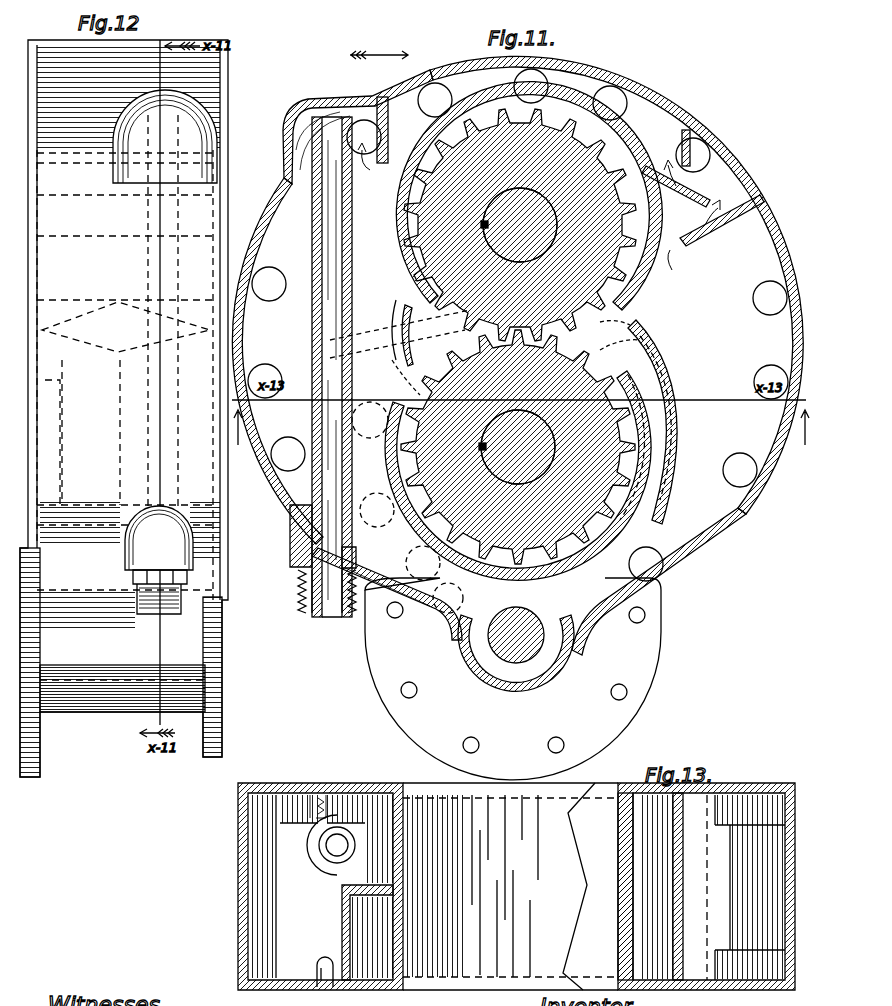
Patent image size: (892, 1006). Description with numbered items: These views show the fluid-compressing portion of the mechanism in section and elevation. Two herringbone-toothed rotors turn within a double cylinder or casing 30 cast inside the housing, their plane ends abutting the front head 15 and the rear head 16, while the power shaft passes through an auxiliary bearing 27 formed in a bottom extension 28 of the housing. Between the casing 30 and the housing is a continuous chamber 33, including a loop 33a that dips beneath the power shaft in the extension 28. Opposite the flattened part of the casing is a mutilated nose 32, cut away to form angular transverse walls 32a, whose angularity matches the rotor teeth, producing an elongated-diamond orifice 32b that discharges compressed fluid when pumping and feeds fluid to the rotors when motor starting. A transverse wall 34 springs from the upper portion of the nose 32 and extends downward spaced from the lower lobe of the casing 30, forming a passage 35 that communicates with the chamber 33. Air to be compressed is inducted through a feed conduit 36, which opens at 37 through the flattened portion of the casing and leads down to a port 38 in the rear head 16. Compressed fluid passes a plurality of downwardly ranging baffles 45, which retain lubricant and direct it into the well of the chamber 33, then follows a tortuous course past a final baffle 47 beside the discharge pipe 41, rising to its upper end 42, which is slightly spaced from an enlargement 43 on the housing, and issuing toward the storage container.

In FIG. 12, the front head 15 is at (222, 734).
In FIG. 12, the rear head 16 is at (40, 744).
In FIG. 11, the auxiliary bearing 27 is at (480, 646).
In FIG. 11, the bottom extension 28 is at (570, 690).
In FIG. 11, the double cylinder casing 30 is at (604, 148).
In FIG. 13, the double cylinder casing 30 is at (623, 840).
In FIG. 11, the mutilated nose 32 is at (640, 312).
In FIG. 12, the angular transverse walls 32a is at (112, 312).
In FIG. 11, the angular transverse walls 32a is at (612, 348).
In FIG. 13, the angular transverse walls 32a is at (596, 782).
In FIG. 11, the orifice 32b is at (598, 316).
In FIG. 11, the chamber 33 is at (748, 235).
In FIG. 11, the loop 33a is at (590, 650).
In FIG. 11, the transverse wall 34 is at (680, 372).
In FIG. 13, the transverse wall 34 is at (680, 866).
In FIG. 11, the passage 35 is at (686, 400).
In FIG. 11, the feed conduit 36 is at (372, 340).
In FIG. 11, the opening 37 is at (402, 302).
In FIG. 11, the port 38 is at (430, 598).
In FIG. 11, the discharge pipe 41 is at (372, 96).
In FIG. 13, the discharge pipe 41 is at (337, 840).
In FIG. 11, the upper end of discharge pipe 42 is at (333, 112).
In FIG. 11, the enlargement 43 is at (288, 128).
In FIG. 11, the baffles 45 is at (690, 138).
In FIG. 11, the final baffle 47 is at (405, 65).